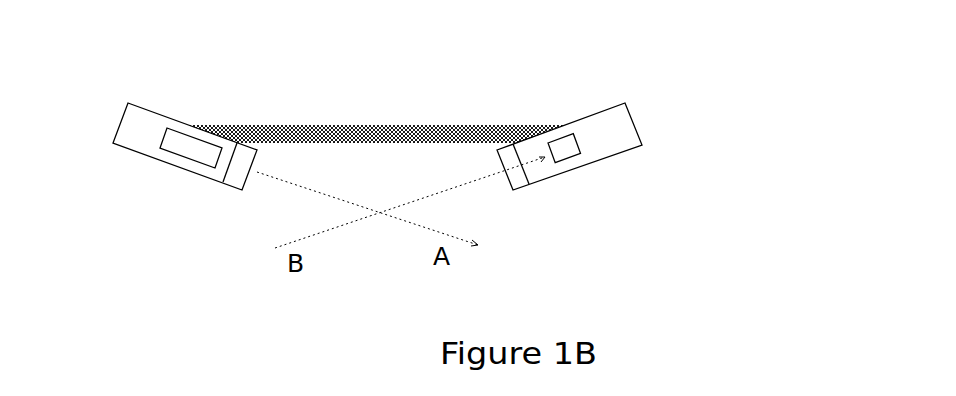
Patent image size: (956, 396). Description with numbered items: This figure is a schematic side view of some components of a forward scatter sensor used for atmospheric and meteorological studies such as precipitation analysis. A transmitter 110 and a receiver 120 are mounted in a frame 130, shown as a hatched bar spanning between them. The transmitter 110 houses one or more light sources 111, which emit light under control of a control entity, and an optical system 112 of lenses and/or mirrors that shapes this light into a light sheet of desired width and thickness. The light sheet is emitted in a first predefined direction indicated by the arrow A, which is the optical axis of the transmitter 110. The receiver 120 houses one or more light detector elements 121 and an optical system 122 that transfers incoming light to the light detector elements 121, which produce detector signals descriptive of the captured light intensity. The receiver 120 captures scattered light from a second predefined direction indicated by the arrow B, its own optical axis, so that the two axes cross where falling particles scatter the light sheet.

The transmitter 110 is at (190, 170).
The light source 111 is at (176, 131).
The optical system 112 is at (232, 188).
The receiver 120 is at (608, 158).
The light detector element 121 is at (557, 140).
The optical system 122 is at (520, 188).
The frame 130 is at (333, 126).